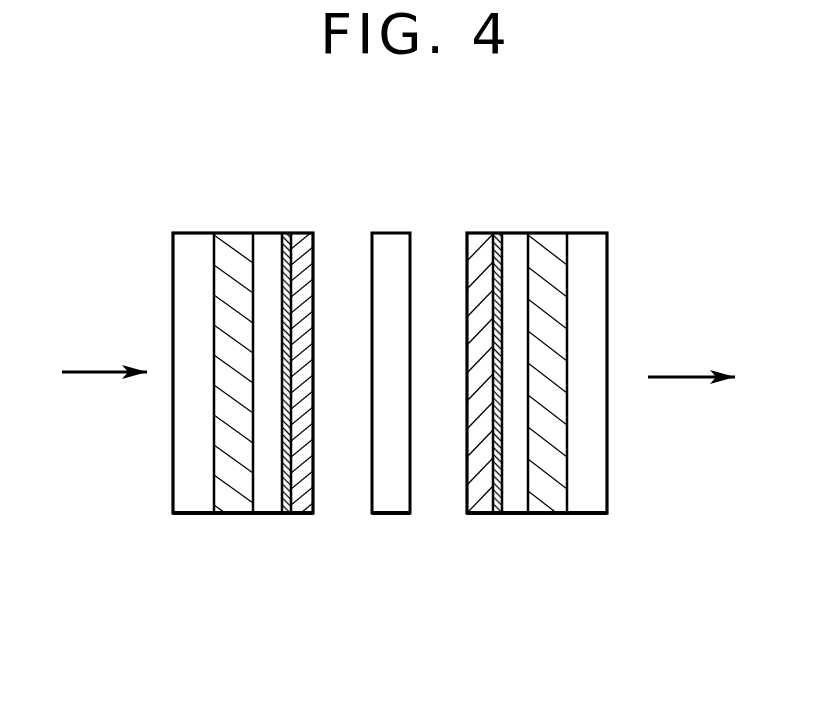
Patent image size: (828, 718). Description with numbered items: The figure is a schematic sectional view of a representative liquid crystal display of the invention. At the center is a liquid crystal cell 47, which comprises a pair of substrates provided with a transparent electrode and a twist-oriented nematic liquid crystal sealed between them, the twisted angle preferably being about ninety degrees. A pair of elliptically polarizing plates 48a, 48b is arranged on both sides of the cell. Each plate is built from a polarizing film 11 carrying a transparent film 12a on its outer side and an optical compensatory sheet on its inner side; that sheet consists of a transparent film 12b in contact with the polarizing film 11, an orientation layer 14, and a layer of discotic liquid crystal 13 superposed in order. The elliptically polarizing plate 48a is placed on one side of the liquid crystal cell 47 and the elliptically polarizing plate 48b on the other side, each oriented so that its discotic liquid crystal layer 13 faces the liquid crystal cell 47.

The polarizing film 11 is at (232, 502).
The transparent film 12a is at (182, 493).
The transparent film 12b is at (267, 502).
The layer of discotic liquid crystal 13 is at (312, 500).
The orientation layer 14 is at (285, 503).
The liquid crystal cell 47 is at (395, 233).
The elliptically polarizing plate 48a is at (260, 207).
The elliptically polarizing plate 48b is at (543, 218).